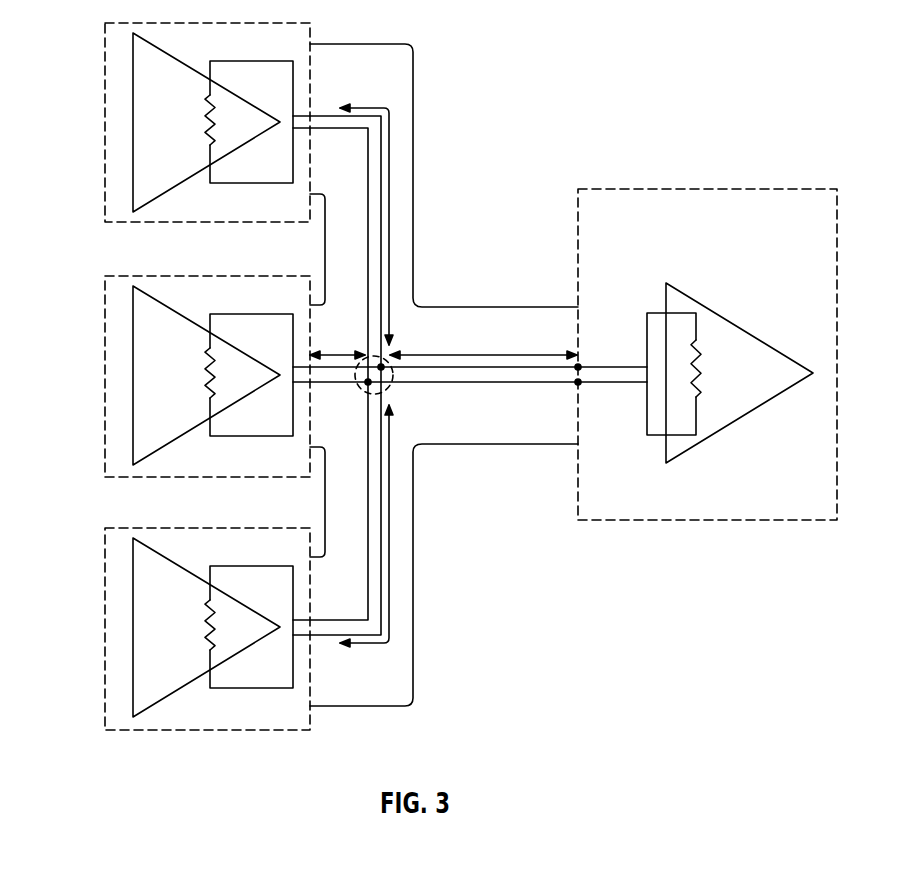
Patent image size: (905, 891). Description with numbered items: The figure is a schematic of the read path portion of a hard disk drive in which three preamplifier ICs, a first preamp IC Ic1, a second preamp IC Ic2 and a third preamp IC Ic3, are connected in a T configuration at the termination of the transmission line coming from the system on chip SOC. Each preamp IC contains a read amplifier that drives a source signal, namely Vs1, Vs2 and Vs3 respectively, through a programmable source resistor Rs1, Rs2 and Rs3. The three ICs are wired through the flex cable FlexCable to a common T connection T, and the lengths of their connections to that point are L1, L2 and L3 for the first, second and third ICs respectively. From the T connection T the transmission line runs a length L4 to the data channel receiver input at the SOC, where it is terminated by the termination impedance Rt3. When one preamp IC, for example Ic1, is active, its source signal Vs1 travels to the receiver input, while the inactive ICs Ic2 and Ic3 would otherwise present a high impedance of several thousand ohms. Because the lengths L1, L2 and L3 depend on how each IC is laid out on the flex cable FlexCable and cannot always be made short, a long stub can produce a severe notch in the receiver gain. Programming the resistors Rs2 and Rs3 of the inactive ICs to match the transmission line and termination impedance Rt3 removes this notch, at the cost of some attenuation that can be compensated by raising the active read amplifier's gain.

The first preamplifier IC Ic1 is at (104, 65).
The second preamplifier IC Ic2 is at (104, 322).
The third preamplifier IC Ic3 is at (104, 573).
The source signal Vs1 is at (251, 109).
The source signal Vs2 is at (251, 362).
The source signal Vs3 is at (251, 612).
The programmable resistor Rs1 is at (229, 120).
The programmable resistor Rs2 is at (229, 373).
The programmable resistor Rs3 is at (229, 625).
The flex cable FlexCable is at (432, 306).
The T connection T is at (385, 390).
The connection length L1 is at (366, 213).
The connection length L2 is at (337, 343).
The connection length L3 is at (366, 538).
The transmission line length L4 is at (483, 343).
The system on chip SOC is at (600, 188).
The termination impedance Rt3 is at (730, 373).